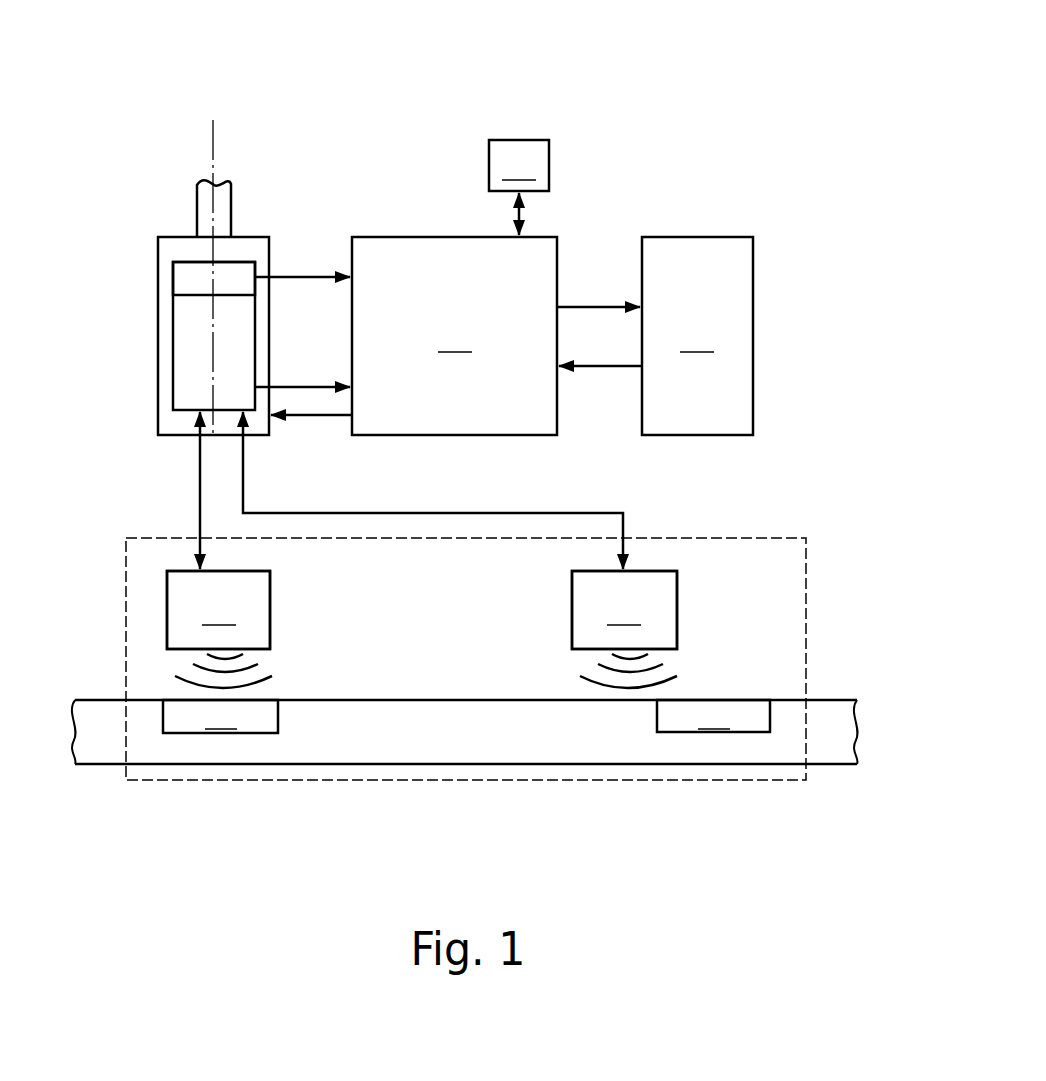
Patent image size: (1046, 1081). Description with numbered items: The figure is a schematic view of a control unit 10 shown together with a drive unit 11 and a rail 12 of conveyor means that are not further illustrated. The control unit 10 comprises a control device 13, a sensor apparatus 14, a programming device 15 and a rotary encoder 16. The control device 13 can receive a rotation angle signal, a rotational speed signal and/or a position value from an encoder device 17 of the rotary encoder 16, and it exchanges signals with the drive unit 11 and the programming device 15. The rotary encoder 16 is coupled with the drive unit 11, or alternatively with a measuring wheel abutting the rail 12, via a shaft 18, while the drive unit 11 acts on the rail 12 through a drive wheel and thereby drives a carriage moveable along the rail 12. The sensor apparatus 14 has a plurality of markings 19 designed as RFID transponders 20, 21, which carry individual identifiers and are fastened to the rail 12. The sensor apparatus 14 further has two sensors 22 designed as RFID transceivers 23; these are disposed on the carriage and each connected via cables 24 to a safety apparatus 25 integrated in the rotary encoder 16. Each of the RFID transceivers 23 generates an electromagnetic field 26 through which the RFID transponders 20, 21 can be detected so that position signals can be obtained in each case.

The control unit 10 is at (345, 102).
The drive unit 11 is at (655, 336).
The rail 12 is at (452, 747).
The control device 13 is at (406, 336).
The sensor apparatus 14 is at (770, 550).
The programming device 15 is at (519, 187).
The rotary encoder 16 is at (177, 248).
The encoder device 17 is at (183, 283).
The shaft 18 is at (203, 202).
The markings 19 is at (225, 737).
The RFID transponder 20 is at (220, 716).
The RFID transponder 21 is at (713, 716).
The sensors 22 is at (160, 603).
The RFID transceivers 23 is at (422, 610).
The cables 24 is at (200, 473).
The safety apparatus 25 is at (183, 340).
The electromagnetic field 26 is at (170, 667).